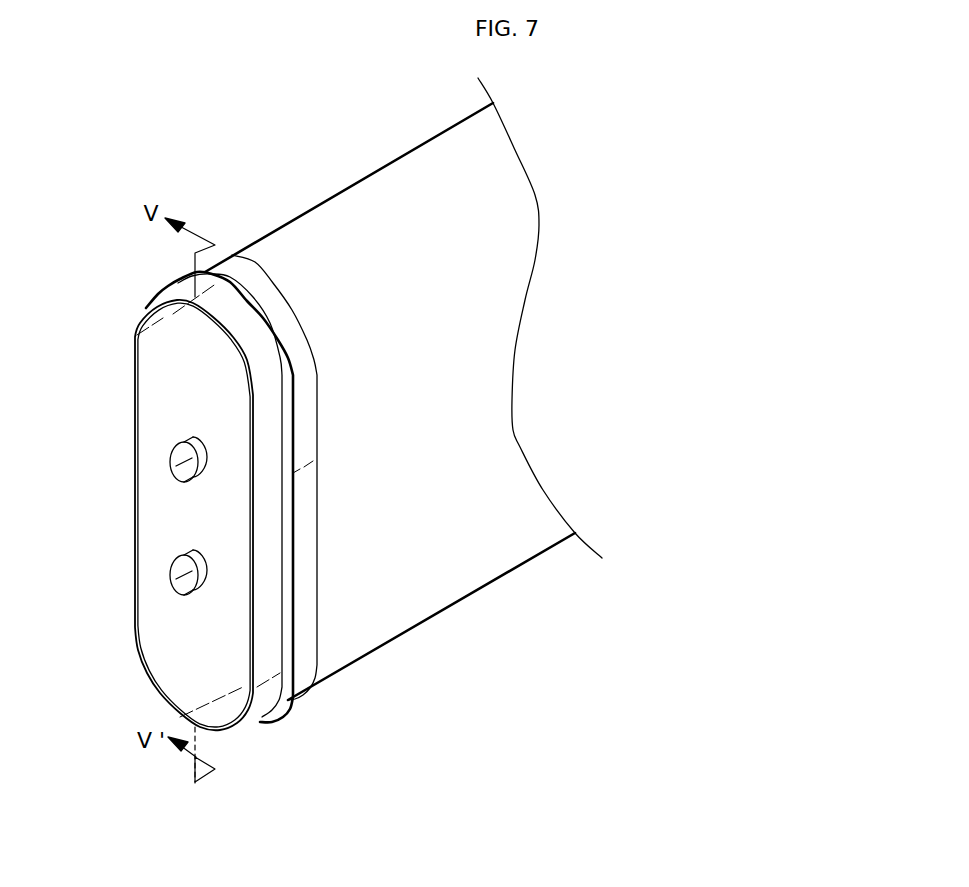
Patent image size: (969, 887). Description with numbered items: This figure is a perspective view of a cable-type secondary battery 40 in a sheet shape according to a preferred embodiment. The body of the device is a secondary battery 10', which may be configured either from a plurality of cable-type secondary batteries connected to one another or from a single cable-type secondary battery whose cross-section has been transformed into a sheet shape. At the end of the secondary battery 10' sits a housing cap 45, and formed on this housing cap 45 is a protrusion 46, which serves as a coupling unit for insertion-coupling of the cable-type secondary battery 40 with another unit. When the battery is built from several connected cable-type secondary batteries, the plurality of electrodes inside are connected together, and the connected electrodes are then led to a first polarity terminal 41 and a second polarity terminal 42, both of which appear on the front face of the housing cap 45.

The cable-type secondary battery 40 is at (403, 389).
The secondary battery 10' is at (349, 187).
The housing cap 45 is at (235, 275).
The protrusion 46 is at (292, 698).
The second polarity terminal 42 is at (170, 465).
The first polarity terminal 41 is at (170, 580).